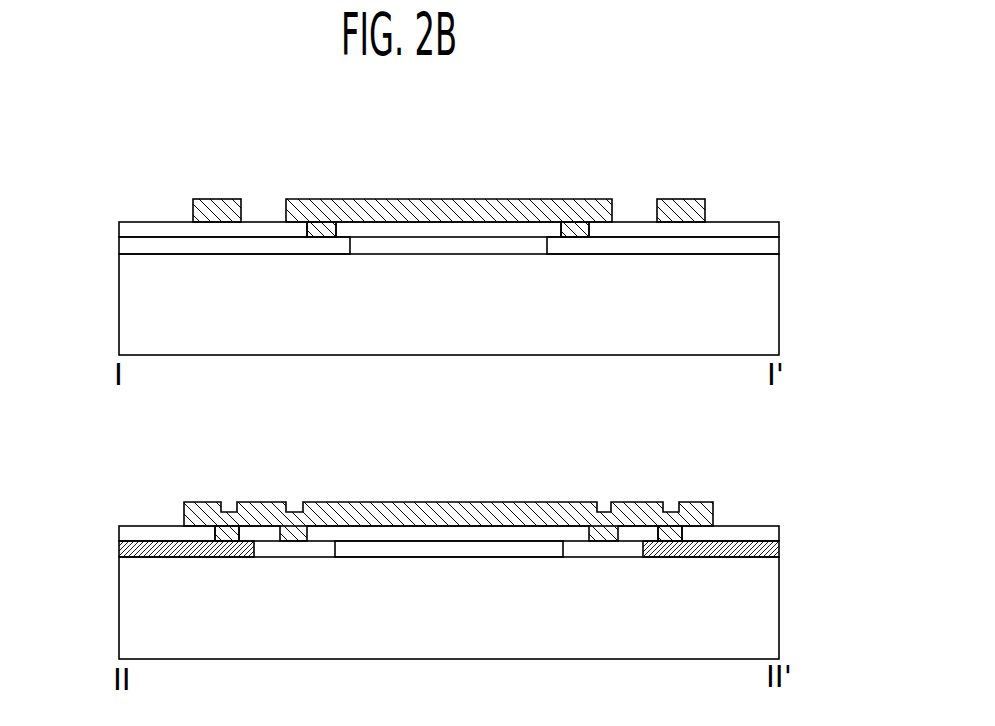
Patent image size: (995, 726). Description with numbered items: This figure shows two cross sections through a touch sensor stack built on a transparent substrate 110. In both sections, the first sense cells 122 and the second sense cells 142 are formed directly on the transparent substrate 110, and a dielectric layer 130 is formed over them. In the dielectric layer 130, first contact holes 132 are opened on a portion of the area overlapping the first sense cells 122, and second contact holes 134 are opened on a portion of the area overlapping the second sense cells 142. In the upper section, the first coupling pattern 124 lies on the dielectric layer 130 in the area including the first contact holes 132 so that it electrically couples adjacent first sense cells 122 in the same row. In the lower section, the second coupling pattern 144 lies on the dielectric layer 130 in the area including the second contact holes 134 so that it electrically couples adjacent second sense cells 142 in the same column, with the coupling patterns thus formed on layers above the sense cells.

The transparent substrate 110 is at (766, 295).
The first sense cell 122 is at (128, 248).
The first coupling pattern 124 is at (449, 199).
The dielectric layer 130 is at (128, 231).
The first contact hole 132 is at (324, 208).
The second contact hole 134 is at (226, 522).
The second sense cell 142 is at (128, 553).
The second coupling pattern 144 is at (213, 199).